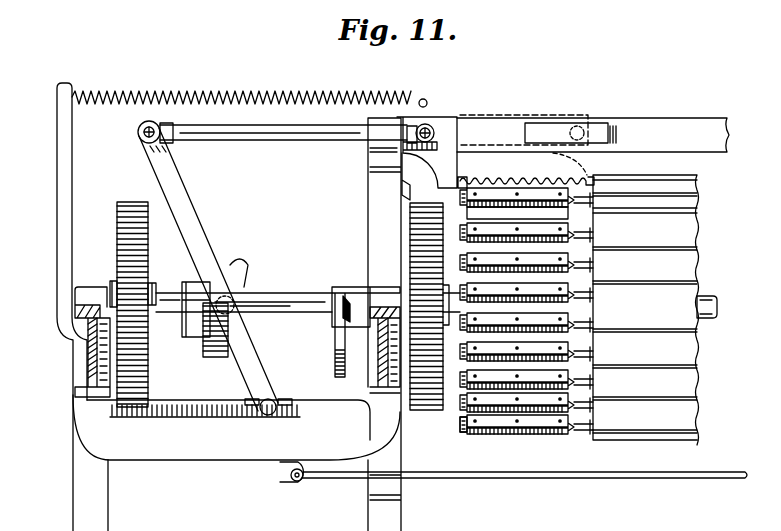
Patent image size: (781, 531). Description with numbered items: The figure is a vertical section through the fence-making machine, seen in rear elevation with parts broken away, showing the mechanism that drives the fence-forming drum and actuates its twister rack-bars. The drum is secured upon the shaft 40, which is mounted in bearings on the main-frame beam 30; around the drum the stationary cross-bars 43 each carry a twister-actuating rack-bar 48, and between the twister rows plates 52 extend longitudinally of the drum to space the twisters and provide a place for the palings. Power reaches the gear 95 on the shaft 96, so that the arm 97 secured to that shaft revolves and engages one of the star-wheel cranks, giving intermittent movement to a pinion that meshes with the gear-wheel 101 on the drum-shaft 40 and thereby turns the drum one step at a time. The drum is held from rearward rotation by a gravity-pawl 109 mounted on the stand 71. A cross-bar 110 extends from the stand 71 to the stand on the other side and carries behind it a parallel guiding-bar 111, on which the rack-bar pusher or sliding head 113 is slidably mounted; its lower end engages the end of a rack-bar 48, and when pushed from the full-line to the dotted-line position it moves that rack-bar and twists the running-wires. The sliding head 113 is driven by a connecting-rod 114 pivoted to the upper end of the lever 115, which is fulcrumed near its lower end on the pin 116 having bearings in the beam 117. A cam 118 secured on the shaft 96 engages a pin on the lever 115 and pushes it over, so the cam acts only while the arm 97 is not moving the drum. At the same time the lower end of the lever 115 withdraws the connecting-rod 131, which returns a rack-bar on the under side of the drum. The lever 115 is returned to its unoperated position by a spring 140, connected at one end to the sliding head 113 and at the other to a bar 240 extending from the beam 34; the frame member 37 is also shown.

The bar 240 is at (58, 203).
The spring 140 is at (222, 97).
The frame member 37 is at (235, 495).
The beam 117 is at (236, 427).
The beam 34 is at (88, 368).
The gear 95 is at (118, 232).
The shaft 96 is at (292, 292).
The drum-shaft 40 is at (712, 296).
The cam 118 is at (212, 357).
The lever 115 is at (198, 231).
The connecting-rod 114 is at (318, 138).
The rack-bar pusher or head 113 is at (443, 122).
The gravity-pawl 109 is at (403, 186).
The cross-bar 110 is at (658, 129).
The guiding-bar 111 is at (547, 127).
The twister-actuating rack-bar 48 is at (514, 180).
The stand 71 is at (384, 324).
The gear-wheel 101 is at (420, 285).
The plate 52 is at (646, 310).
The arm 97 is at (333, 342).
The beam 30 is at (383, 372).
The pin 116 is at (274, 400).
The cross-bar 43 is at (460, 418).
The connecting-rod 131 is at (543, 472).